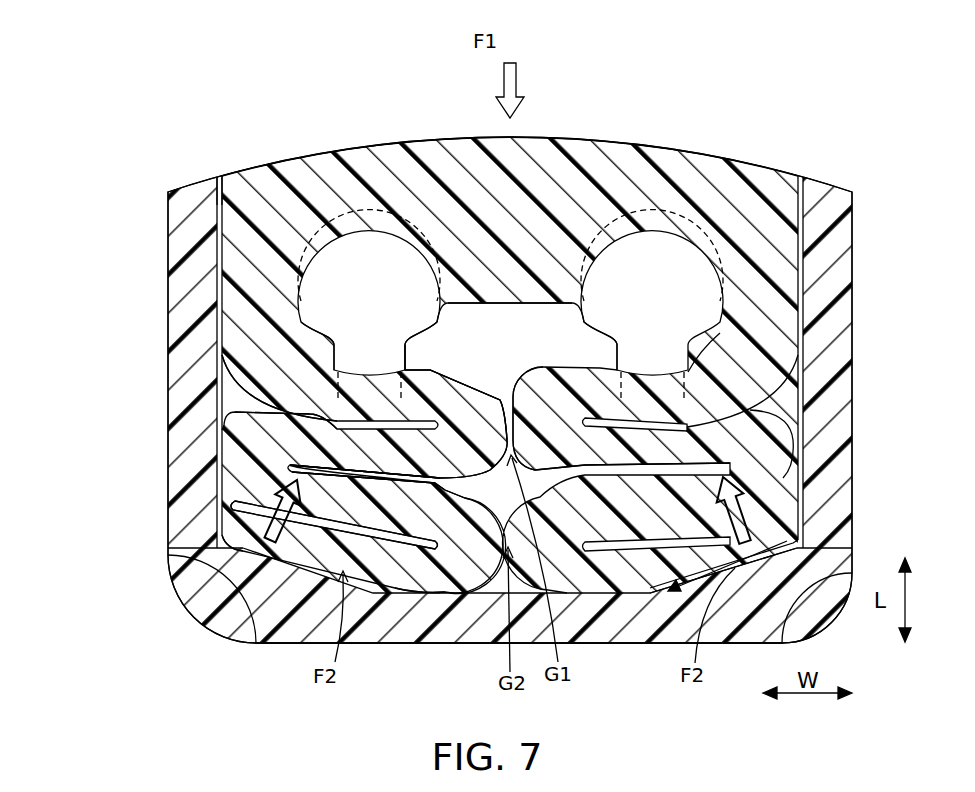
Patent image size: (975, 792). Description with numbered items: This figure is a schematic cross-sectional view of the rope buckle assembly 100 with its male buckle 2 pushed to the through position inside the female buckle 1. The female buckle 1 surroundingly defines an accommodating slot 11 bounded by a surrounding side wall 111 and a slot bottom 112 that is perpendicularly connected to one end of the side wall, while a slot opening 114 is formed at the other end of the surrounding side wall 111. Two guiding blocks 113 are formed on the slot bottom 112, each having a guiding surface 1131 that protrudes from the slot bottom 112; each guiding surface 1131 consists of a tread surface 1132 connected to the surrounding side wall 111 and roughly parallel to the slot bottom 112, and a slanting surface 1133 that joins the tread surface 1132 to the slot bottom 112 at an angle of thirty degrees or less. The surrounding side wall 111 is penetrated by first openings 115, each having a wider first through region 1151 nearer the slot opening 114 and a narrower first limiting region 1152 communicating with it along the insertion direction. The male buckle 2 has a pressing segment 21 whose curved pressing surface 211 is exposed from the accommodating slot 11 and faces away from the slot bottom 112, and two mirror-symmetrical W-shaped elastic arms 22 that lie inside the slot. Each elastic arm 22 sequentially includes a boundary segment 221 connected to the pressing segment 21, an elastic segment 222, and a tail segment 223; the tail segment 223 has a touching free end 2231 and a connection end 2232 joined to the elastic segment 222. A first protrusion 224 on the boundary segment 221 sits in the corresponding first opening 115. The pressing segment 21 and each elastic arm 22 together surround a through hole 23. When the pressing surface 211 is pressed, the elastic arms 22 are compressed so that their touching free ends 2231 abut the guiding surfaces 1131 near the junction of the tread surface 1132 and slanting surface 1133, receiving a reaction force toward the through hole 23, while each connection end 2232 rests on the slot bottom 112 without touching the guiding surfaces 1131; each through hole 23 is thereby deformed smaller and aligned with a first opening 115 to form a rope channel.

The rope buckle assembly 100 is at (779, 79).
The female buckle 1 is at (216, 624).
The accommodating slot 11 is at (797, 498).
The surrounding side wall 111 is at (163, 251).
The slot bottom 112 is at (284, 650).
The guiding block 113 is at (652, 570).
The slot opening 114 is at (214, 180).
The first opening 115 is at (581, 316).
The first through region 1151 is at (316, 320).
The first limiting region 1152 is at (333, 400).
The guiding surface 1131 is at (86, 462).
The tread surface 1132 is at (236, 538).
The slanting surface 1133 is at (296, 470).
The male buckle 2 is at (902, 272).
The pressing segment 21 is at (797, 280).
The pressing surface 211 is at (718, 150).
The elastic arm 22 is at (784, 408).
The boundary segment 221 is at (421, 370).
The elastic segment 222 is at (240, 425).
The tail segment 223 is at (398, 589).
The touching free end 2231 is at (224, 548).
The connection end 2232 is at (441, 600).
The first protrusion 224 is at (392, 395).
The through hole 23 is at (328, 244).